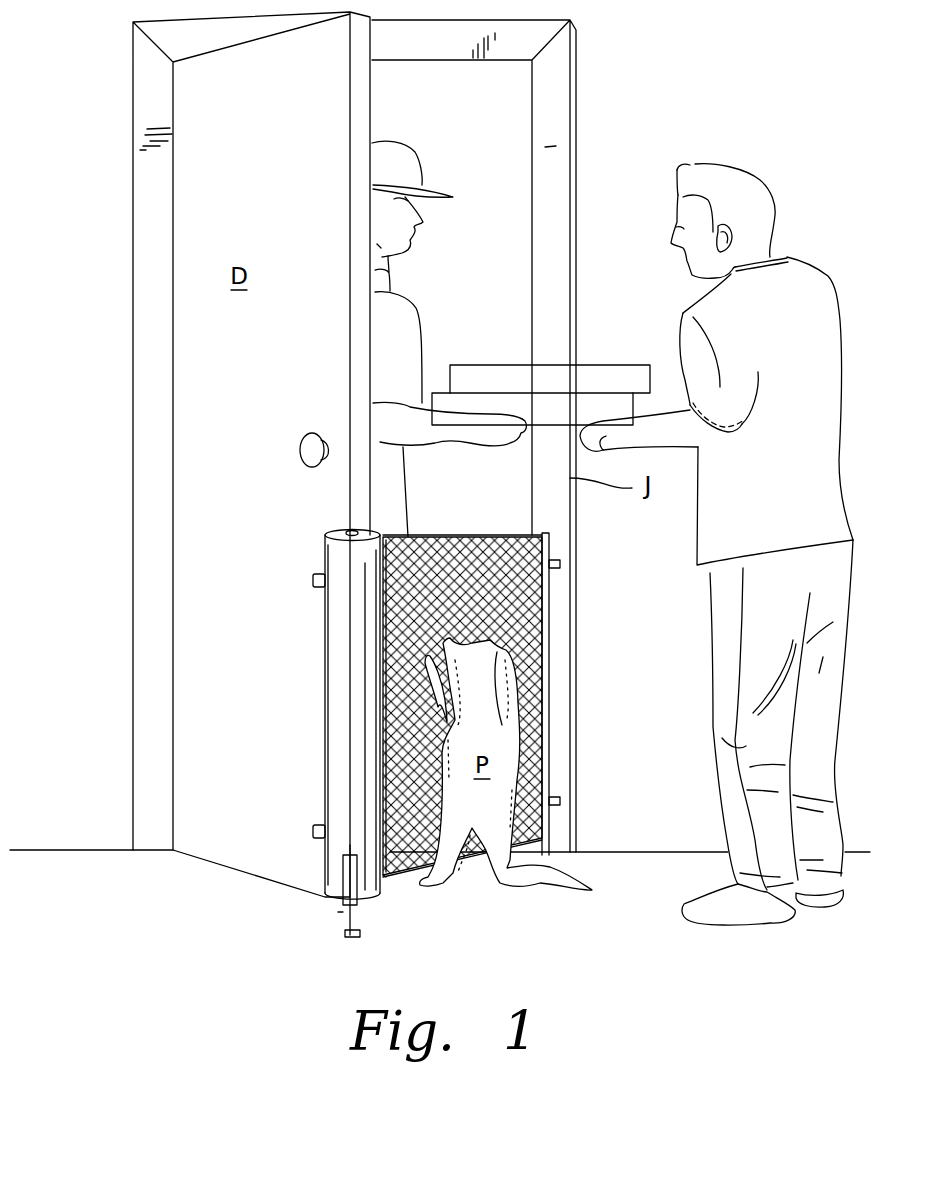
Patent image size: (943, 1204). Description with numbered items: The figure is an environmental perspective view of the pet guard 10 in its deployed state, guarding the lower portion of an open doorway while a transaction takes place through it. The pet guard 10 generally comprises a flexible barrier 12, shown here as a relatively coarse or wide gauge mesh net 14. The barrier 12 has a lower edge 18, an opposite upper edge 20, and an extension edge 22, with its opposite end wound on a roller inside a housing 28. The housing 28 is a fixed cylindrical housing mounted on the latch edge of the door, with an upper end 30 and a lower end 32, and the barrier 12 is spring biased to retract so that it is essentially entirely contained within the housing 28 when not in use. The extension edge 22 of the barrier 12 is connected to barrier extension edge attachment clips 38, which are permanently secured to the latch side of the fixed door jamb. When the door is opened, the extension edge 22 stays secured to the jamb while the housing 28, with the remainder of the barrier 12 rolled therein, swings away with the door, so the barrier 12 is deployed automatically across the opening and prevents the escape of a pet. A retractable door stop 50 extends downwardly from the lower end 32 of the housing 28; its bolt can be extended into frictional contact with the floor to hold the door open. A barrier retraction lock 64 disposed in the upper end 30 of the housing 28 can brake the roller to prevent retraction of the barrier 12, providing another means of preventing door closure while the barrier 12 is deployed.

The pet guard 10 is at (240, 826).
The flexible barrier 12 is at (512, 600).
The mesh net 14 is at (405, 616).
The lower edge 18 is at (300, 917).
The upper edge 20 is at (462, 537).
The extension edge 22 is at (551, 720).
The housing 28 is at (325, 712).
The upper end 30 is at (325, 555).
The lower end 32 is at (332, 904).
The barrier extension edge attachment clips 38 is at (561, 564).
The retractable door stop 50 is at (400, 878).
The barrier retraction lock 64 is at (348, 530).